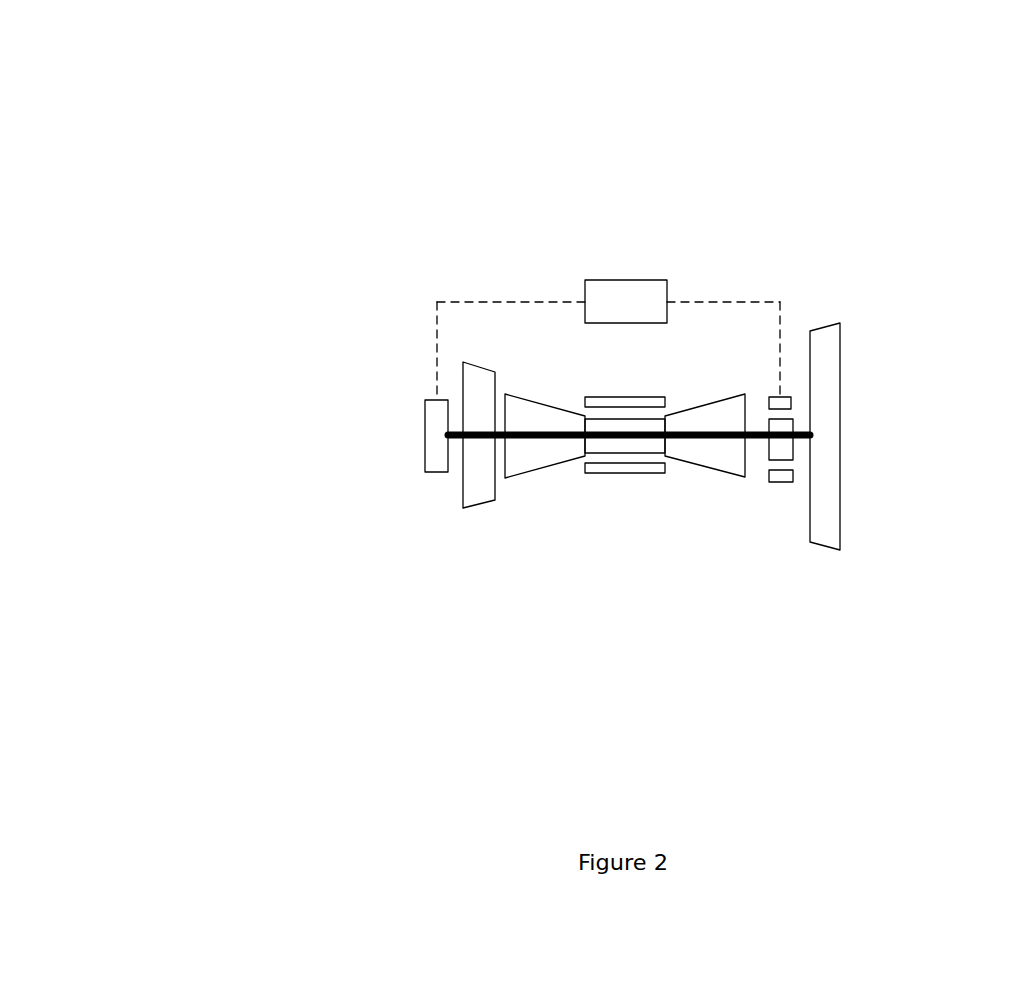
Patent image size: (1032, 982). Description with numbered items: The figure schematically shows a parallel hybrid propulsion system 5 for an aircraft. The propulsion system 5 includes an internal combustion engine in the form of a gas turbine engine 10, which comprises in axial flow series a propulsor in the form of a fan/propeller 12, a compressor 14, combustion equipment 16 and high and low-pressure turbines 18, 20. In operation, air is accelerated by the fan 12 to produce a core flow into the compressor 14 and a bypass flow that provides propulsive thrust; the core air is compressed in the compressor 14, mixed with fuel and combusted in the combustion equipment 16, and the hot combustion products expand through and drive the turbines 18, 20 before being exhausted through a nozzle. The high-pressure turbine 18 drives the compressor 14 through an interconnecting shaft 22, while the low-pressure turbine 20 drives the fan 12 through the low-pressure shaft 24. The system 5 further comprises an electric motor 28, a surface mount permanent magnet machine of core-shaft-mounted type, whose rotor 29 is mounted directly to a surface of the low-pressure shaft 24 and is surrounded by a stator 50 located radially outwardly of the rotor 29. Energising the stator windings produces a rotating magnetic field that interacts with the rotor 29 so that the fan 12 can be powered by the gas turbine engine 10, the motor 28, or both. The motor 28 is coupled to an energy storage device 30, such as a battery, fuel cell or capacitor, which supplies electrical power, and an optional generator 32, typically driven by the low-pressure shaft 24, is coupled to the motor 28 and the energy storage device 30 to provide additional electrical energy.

The propulsion system 5 is at (296, 369).
The gas turbine engine 10 is at (550, 350).
The fan/propeller 12 is at (840, 353).
The compressor 14 is at (706, 468).
The combustion equipment 16 is at (645, 473).
The high-pressure turbine 18 is at (518, 480).
The low-pressure turbine 20 is at (480, 505).
The interconnecting shaft 22 is at (591, 473).
The low-pressure shaft 24 is at (711, 433).
The electric motor 28 is at (783, 510).
The rotor 29 is at (782, 417).
The energy storage device 30 is at (668, 302).
The generator 32 is at (437, 473).
The stator 50 is at (793, 473).